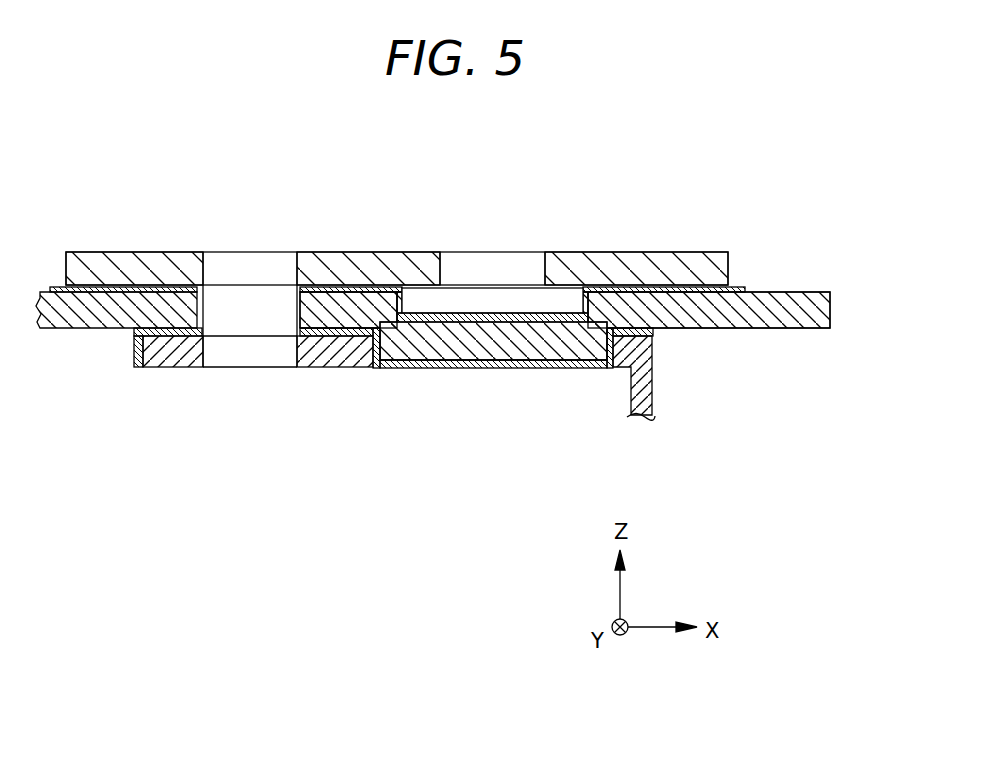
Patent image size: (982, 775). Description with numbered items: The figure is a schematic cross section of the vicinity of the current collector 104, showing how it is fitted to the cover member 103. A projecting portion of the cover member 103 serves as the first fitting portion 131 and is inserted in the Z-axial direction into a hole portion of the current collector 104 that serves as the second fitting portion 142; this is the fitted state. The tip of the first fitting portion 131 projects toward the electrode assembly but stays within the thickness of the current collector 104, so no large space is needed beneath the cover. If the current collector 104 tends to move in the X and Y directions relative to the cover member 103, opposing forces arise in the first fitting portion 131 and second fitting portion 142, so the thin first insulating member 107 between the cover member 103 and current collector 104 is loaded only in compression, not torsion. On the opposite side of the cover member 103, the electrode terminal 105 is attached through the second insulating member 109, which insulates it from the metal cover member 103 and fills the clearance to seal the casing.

The cover member 103 is at (817, 312).
The current collector 104 is at (645, 386).
The electrode terminal 105 is at (720, 268).
The first insulating member 107 is at (648, 332).
The second insulating member 109 is at (743, 289).
The first fitting portion 131 is at (527, 345).
The second fitting portion 142 is at (374, 368).